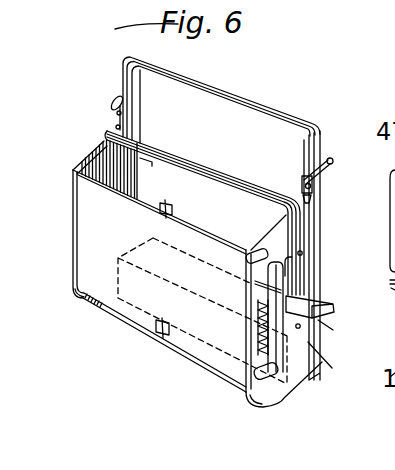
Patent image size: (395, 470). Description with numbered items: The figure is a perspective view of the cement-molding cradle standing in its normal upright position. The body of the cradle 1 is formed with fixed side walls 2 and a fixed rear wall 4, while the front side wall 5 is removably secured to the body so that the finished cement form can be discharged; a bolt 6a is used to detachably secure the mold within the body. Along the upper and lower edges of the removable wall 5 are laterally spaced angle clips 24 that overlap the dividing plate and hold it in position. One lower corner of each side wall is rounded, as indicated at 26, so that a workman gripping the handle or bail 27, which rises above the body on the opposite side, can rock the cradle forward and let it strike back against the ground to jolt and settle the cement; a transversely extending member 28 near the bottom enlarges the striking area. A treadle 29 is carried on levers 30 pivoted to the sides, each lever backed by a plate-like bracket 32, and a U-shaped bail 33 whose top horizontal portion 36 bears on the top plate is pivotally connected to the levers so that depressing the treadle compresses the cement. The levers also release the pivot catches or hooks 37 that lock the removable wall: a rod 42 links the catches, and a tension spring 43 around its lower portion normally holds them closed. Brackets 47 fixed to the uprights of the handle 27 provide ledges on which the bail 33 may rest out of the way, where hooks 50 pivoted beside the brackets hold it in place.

The body of the cradle 1 is at (68, 202).
The side walls 2 is at (97, 163).
The rear wall 4 is at (200, 195).
The front side wall 5 is at (90, 231).
The bolt 6a is at (304, 253).
The angle clips 24 is at (167, 202).
The rounded corner 26 is at (92, 311).
The handle or bail 27 is at (318, 141).
The transversely extending member 28 is at (223, 94).
The treadle 29 is at (316, 298).
The levers 30 is at (322, 322).
The plate-like bracket 32 is at (321, 355).
The U-shaped member or bail 33 is at (302, 230).
The top horizontal portion of the bail 36 is at (236, 188).
The pivot catches or hooks 37 is at (256, 249).
The rod 42 is at (256, 281).
The tension spring 43 is at (259, 332).
The brackets 47 is at (322, 188).
The hooks 50 is at (116, 104).